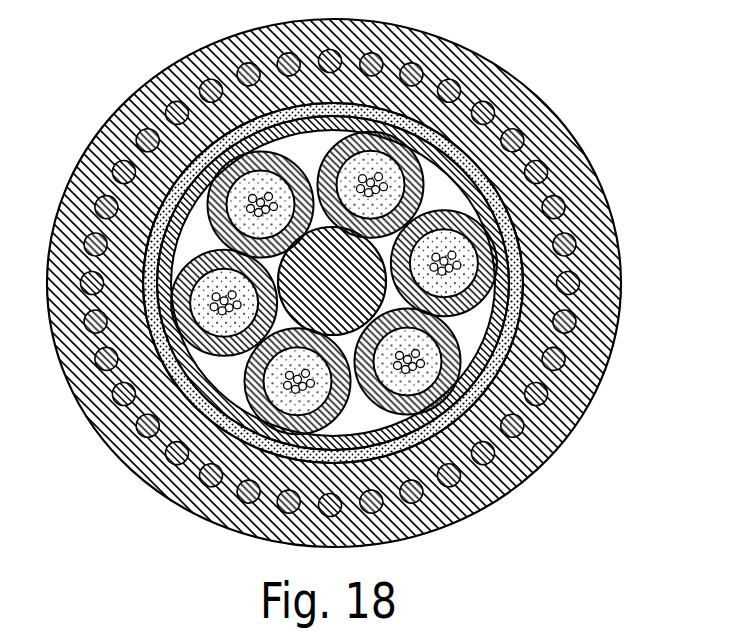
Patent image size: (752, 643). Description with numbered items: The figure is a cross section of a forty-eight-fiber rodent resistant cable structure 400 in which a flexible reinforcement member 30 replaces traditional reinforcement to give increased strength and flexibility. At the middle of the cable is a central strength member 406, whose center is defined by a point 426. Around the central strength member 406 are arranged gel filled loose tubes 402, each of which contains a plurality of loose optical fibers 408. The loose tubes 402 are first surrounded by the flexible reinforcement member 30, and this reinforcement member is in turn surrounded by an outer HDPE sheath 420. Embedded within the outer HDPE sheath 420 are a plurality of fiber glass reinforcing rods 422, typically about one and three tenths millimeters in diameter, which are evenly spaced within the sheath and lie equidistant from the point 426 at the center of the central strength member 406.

The Rodent Resistant Cable structure 400 is at (368, 283).
The gel filled loose tube 402 is at (322, 162).
The central strength member 406 is at (350, 312).
The point defining the center of the central strength member 426 is at (332, 281).
The loose optical fibers 408 is at (398, 370).
The flexible reinforcement member 30 is at (494, 187).
The fiber glass reinforcing rods 422 is at (580, 236).
The outer HDPE sheath 420 is at (620, 295).